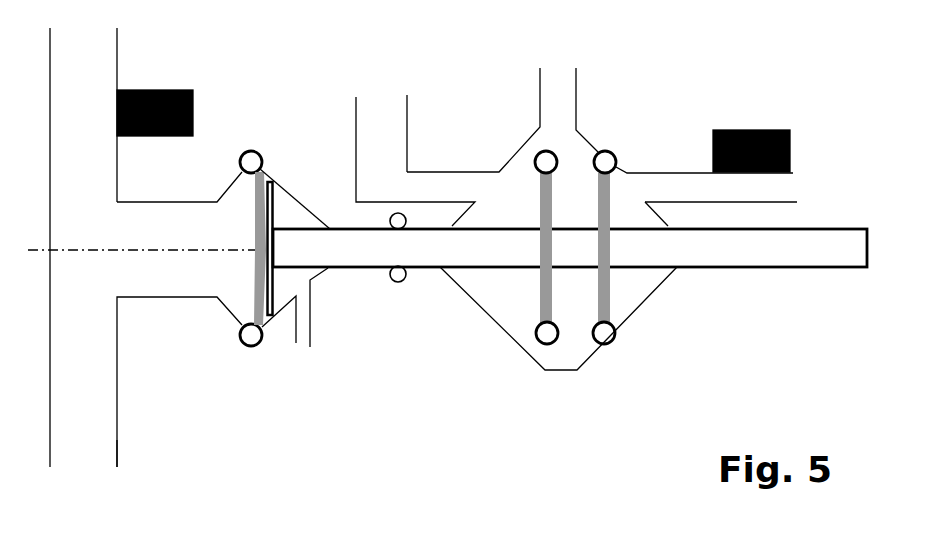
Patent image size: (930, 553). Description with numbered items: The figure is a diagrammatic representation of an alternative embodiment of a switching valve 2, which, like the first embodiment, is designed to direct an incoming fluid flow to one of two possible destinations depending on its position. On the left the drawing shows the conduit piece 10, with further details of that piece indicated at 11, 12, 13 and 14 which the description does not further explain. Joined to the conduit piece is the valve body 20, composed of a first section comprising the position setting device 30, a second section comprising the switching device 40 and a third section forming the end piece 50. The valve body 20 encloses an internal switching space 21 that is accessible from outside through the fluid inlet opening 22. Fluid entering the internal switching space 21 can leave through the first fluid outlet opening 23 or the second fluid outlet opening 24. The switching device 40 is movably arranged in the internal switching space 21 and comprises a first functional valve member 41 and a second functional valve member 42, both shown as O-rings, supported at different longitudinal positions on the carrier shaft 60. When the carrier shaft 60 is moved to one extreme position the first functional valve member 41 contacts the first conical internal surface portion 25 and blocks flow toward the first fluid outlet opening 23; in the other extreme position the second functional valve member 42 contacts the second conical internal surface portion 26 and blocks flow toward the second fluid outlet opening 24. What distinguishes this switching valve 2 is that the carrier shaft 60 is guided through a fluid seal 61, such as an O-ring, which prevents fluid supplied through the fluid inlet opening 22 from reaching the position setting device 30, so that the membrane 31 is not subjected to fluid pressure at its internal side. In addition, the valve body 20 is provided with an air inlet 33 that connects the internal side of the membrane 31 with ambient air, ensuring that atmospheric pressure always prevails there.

The switching valve 2 is at (705, 66).
The conduit piece 10 is at (155, 113).
The lower wall 11 is at (93, 373).
The lower flange 12 is at (83, 465).
The upper wall 13 is at (83, 155).
The upper flange 14 is at (80, 30).
The valve body 20 is at (409, 212).
The internal switching space 21 is at (575, 318).
The fluid inlet opening 22 is at (560, 70).
The first fluid outlet opening 23 is at (388, 105).
The second fluid outlet opening 24 is at (795, 187).
The first conical internal surface portion 25 is at (528, 142).
The second conical internal surface portion 26 is at (610, 148).
The position setting device 30 is at (246, 134).
The membrane 31 is at (258, 185).
The air inlet 33 is at (302, 337).
The switching device 40 is at (575, 142).
The first functional valve member 41 is at (545, 293).
The second functional valve member 42 is at (603, 297).
The end piece 50 is at (751, 151).
The carrier shaft 60 is at (740, 253).
The fluid seal 61 is at (399, 283).